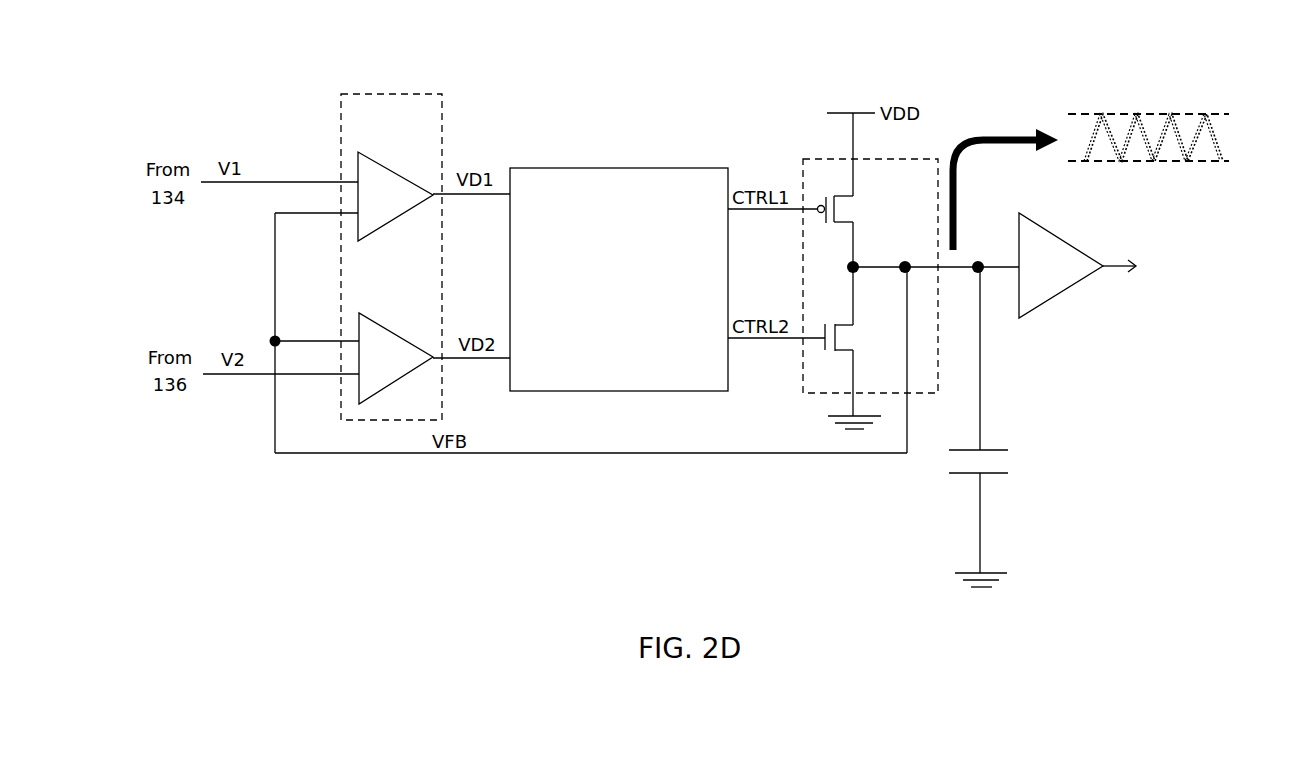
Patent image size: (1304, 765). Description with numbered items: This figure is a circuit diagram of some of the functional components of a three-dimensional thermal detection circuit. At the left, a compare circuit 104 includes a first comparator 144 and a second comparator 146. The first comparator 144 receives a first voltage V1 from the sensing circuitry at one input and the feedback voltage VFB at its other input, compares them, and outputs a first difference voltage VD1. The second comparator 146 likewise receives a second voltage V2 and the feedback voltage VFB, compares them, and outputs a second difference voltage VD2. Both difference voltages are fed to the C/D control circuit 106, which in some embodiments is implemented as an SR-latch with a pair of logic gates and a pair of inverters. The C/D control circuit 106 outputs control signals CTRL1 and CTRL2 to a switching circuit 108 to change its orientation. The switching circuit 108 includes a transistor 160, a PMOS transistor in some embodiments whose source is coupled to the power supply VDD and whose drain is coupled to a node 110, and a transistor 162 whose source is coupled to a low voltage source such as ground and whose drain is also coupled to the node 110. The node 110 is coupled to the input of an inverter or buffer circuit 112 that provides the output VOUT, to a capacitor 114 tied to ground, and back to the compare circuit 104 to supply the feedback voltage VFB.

The compare circuit 104 is at (393, 93).
The first comparator 144 is at (405, 173).
The second comparator 146 is at (407, 337).
The C/D control circuit 106 is at (623, 167).
The switching circuit 108 is at (937, 158).
The transistor 160 is at (850, 207).
The transistor 162 is at (822, 348).
The node 110 is at (978, 259).
The inverter or buffer circuit 112 is at (1045, 307).
The capacitor 114 is at (1012, 463).